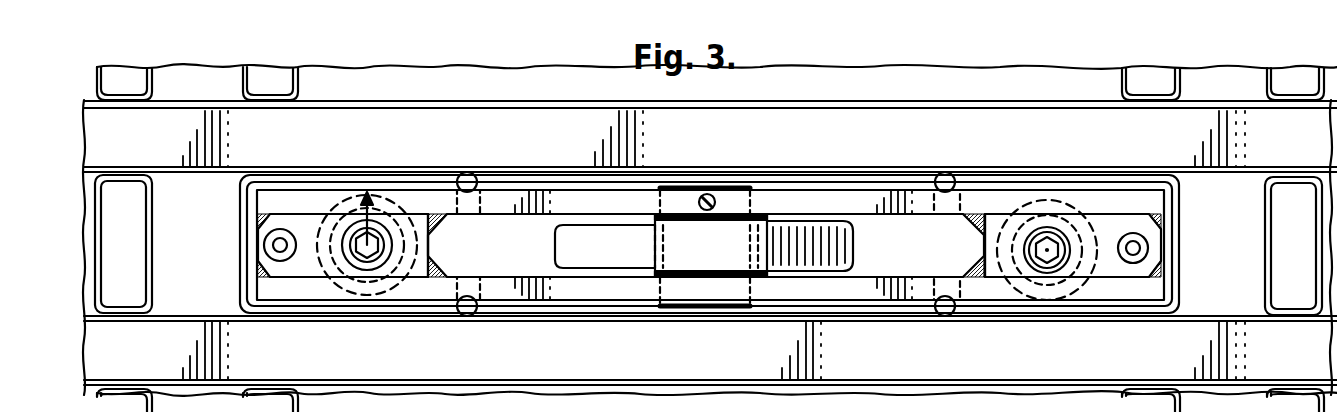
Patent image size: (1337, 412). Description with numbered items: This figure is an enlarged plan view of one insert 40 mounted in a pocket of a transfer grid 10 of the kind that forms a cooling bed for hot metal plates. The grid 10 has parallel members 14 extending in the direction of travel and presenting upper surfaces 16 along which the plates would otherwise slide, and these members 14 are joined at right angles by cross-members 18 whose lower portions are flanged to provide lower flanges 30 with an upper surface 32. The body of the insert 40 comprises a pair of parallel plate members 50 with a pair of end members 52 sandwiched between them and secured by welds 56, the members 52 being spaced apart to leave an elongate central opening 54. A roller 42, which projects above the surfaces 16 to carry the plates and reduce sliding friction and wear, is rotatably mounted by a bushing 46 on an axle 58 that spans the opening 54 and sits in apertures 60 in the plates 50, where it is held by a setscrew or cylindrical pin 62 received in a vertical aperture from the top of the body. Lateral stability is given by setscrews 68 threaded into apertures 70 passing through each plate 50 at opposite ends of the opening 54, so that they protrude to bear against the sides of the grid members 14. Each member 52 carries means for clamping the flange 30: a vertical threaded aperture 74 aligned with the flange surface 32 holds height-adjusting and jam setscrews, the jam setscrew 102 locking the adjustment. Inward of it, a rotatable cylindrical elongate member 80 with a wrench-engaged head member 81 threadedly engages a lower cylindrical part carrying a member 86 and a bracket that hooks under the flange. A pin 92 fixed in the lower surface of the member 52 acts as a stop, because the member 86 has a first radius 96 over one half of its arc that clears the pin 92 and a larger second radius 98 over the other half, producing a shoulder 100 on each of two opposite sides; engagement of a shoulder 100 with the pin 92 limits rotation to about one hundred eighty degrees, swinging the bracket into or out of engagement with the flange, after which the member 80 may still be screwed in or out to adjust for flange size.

The grid 10 is at (1047, 95).
The first parallel portions or members 14 is at (843, 122).
The upper surfaces 16 is at (124, 144).
The cross-portions or cross-members 18 is at (162, 243).
The lower flanges 30 is at (94, 68).
The upper surface 32 is at (268, 84).
The insert 40 is at (880, 180).
The roller 42 is at (856, 247).
The bushing 46 is at (684, 226).
The plate members 50 is at (566, 200).
The members 52 is at (310, 212).
The central opening 54 is at (493, 216).
The welds 56 is at (426, 212).
The axle 58 is at (770, 214).
The apertures 60 is at (669, 196).
The setscrew or cylindrical pin 62 is at (709, 193).
The setscrews 68 is at (460, 192).
The threaded apertures 70 is at (470, 173).
The vertical threaded aperture 74 is at (1134, 264).
The rotatable cylindrical elongate member 80 is at (1028, 300).
The head member 81 is at (1076, 270).
The member 86 is at (410, 164).
The pin 92 is at (431, 246).
The first radius 96 is at (353, 258).
The second radius 98 is at (360, 197).
The shoulder 100 is at (312, 264).
The jam setscrew 102 is at (1150, 249).